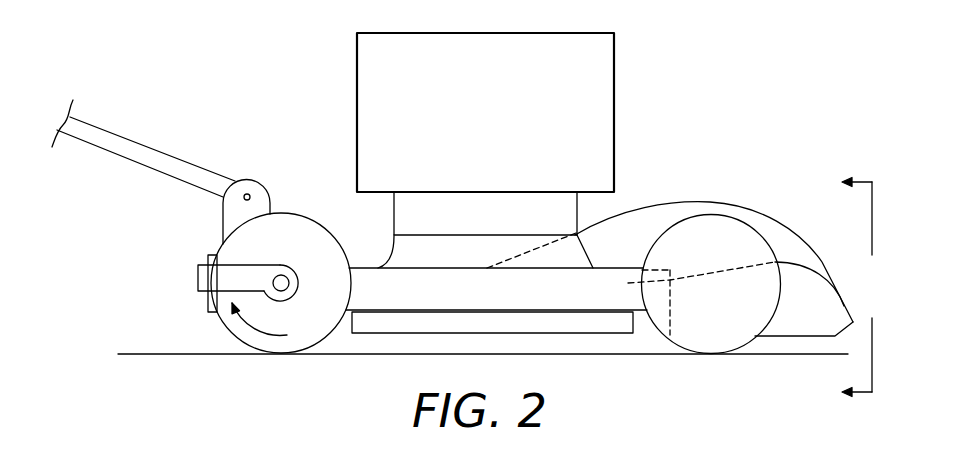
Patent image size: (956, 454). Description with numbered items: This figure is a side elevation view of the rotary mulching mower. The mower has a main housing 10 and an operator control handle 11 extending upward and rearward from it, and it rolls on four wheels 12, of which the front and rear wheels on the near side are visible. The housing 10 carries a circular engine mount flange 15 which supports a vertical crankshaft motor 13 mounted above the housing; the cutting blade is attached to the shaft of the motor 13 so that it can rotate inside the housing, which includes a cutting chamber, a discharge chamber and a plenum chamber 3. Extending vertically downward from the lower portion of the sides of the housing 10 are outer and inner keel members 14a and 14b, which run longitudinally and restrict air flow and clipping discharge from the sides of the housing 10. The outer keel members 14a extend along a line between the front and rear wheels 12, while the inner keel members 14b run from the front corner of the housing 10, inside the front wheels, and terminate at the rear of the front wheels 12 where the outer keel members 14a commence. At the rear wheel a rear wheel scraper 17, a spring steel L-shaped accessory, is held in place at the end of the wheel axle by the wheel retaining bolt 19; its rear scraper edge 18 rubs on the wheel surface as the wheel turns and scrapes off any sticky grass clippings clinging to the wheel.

The main housing 10 is at (472, 302).
The operator control handle 11 is at (137, 139).
The wheels 12 is at (747, 222).
The vertical crankshaft motor 13 is at (357, 87).
The outer keel members 14a is at (515, 320).
The inner keel members 14b is at (777, 337).
The circular engine mount flange 15 is at (585, 249).
The rear wheel scraper 17 is at (247, 263).
The rear scraper edge 18 is at (207, 292).
The wheel retaining bolt 19 is at (290, 279).
The plenum chamber 3 is at (858, 286).